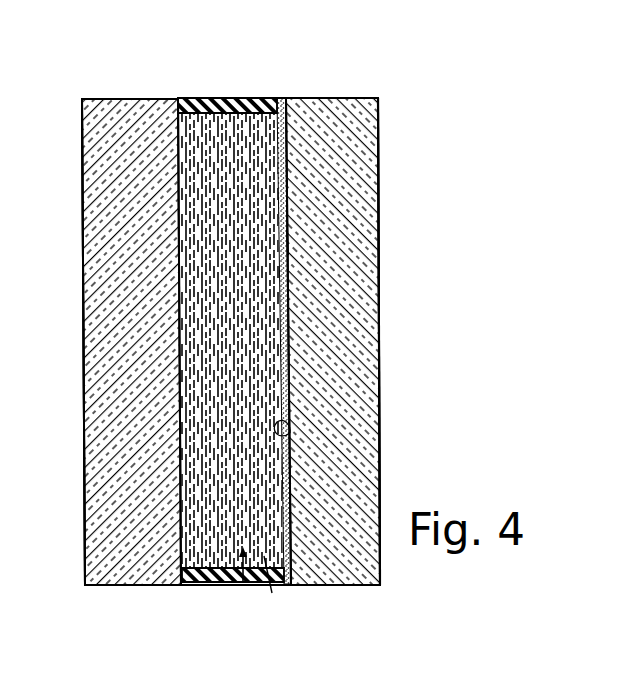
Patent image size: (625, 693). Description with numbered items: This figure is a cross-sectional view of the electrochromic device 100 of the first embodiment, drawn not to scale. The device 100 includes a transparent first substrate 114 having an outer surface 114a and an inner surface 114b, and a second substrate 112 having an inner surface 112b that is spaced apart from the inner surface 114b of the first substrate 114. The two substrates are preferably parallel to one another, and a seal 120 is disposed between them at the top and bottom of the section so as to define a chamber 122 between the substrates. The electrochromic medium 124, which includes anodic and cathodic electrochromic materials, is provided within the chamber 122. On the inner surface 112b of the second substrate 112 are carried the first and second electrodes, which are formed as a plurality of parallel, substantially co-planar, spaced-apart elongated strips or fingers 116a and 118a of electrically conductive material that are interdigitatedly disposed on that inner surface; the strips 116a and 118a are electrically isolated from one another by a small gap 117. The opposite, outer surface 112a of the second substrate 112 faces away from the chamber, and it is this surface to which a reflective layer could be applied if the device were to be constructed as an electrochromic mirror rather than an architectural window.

The electrochromic device 100 is at (80, 78).
The second substrate 112 is at (379, 143).
The outer surface of substrate 112 112a is at (379, 380).
The inner surface of second substrate 112b is at (290, 433).
The transparent first substrate 114 is at (82, 147).
The outer surface of first substrate 114a is at (84, 550).
The inner surface of first substrate 114b is at (170, 556).
The elongated strips of first electrode 116a is at (288, 215).
The gap 117 is at (289, 250).
The elongated strips of second electrode 118a is at (278, 238).
The seal 120 is at (188, 101).
The chamber 122 is at (243, 583).
The electrochromic medium 124 is at (272, 593).